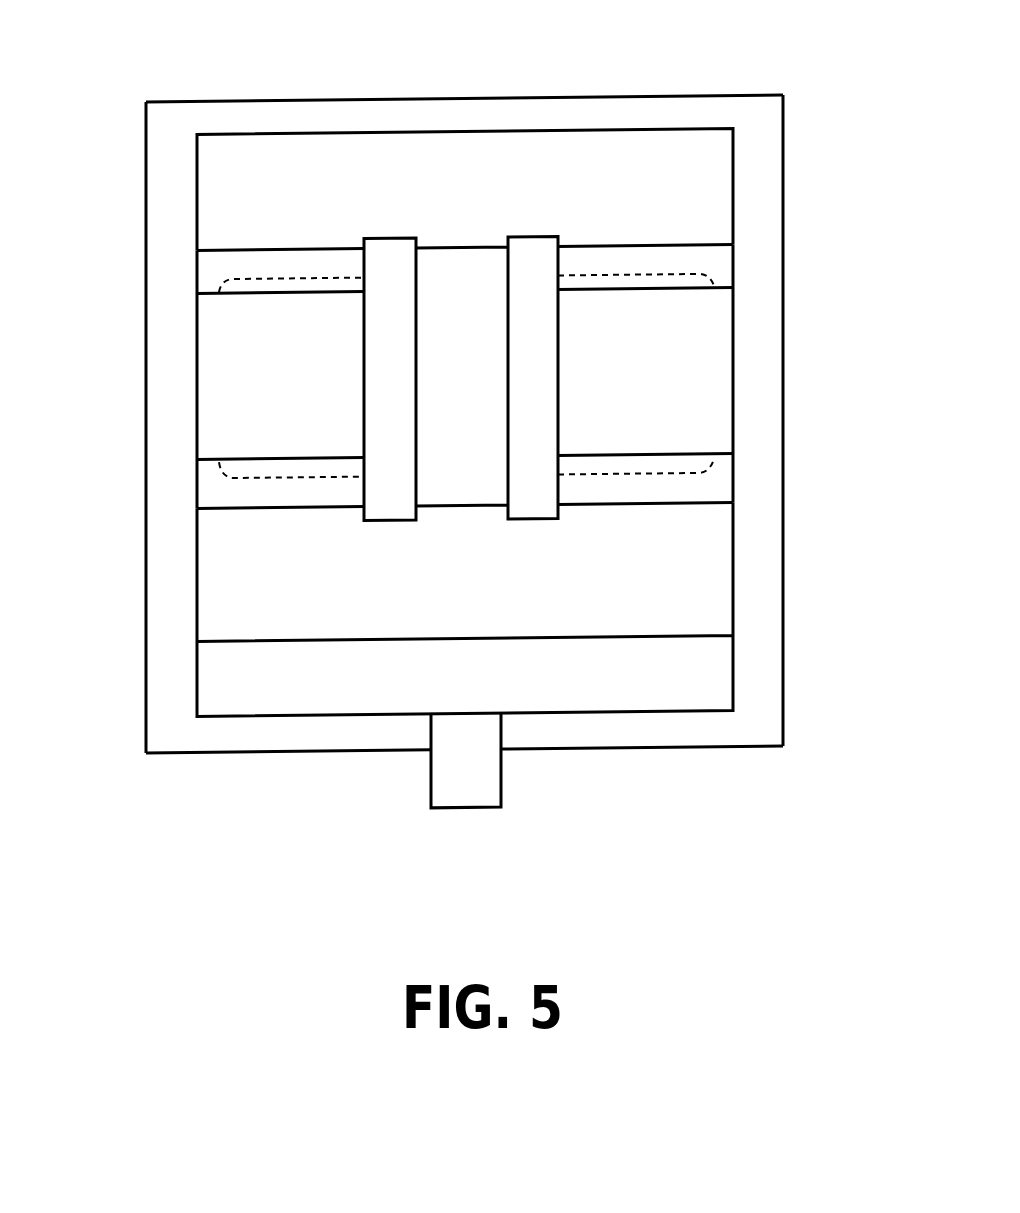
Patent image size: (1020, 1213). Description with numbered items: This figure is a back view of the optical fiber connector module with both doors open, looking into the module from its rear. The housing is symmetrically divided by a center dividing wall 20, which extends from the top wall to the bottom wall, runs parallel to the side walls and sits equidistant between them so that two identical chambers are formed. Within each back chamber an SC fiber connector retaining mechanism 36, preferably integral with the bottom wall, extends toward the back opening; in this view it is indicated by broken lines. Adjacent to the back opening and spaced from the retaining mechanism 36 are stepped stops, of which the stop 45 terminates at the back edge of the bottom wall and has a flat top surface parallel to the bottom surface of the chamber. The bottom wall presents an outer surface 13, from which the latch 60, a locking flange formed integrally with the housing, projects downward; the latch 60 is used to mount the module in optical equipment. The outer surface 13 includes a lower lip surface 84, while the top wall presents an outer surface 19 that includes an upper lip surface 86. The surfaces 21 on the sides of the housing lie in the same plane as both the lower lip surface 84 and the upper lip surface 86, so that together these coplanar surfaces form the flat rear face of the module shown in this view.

The outer surface of the bottom wall 13 is at (690, 600).
The outer surface of the top wall 19 is at (717, 190).
The center dividing wall 20 is at (483, 409).
The side surface 21 is at (170, 336).
The SC fiber connector retaining mechanism 36 is at (285, 472).
The stop 45 is at (222, 492).
The latch 60 is at (502, 785).
The lower lip surface 84 is at (329, 740).
The upper lip surface 86 is at (543, 110).